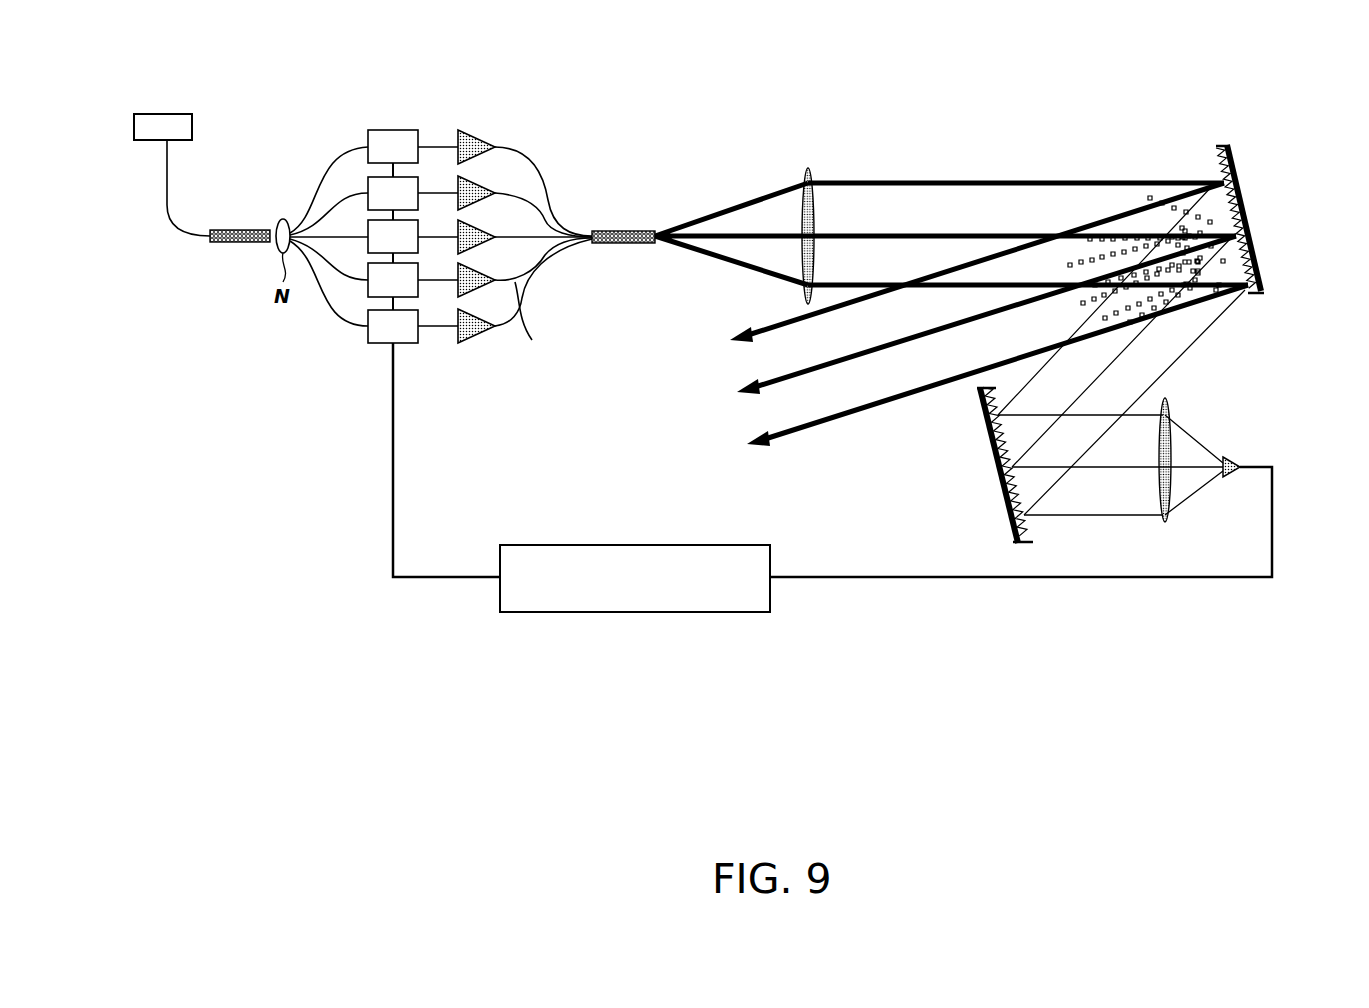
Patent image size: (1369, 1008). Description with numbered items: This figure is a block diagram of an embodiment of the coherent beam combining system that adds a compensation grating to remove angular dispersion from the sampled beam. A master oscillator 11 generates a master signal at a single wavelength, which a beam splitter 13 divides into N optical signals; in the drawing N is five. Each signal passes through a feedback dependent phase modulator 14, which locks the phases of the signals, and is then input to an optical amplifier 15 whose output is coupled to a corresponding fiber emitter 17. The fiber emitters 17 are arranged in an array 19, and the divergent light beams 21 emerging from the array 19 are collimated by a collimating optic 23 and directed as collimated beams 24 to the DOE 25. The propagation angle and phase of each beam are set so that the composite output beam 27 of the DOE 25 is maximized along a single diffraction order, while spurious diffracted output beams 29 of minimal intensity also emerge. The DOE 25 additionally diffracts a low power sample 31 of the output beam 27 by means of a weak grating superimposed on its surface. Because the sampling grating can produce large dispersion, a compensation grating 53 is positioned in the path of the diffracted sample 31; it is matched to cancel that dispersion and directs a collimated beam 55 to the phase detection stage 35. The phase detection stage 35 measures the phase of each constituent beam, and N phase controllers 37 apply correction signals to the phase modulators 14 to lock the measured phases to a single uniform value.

The master oscillator 11 is at (180, 113).
The beam splitter 13 is at (232, 230).
The phase modulator 14 is at (422, 118).
The optical amplifier 15 is at (508, 118).
The fiber emitter 17 is at (532, 160).
The array 19 is at (625, 230).
The divergent light beams 21 is at (721, 182).
The collimating optic 23 is at (810, 165).
The collimated beams 24 is at (934, 160).
The DOE 25 is at (1214, 147).
The composite output beam 27 is at (745, 457).
The spurious diffracted output beams 29 is at (1140, 220).
The diffracted sample 31 is at (1192, 380).
The phase detection stage 35 is at (1240, 462).
The phase controllers 37 is at (572, 544).
The compensation grating 53 is at (997, 487).
The collimated beam 55 is at (1103, 537).